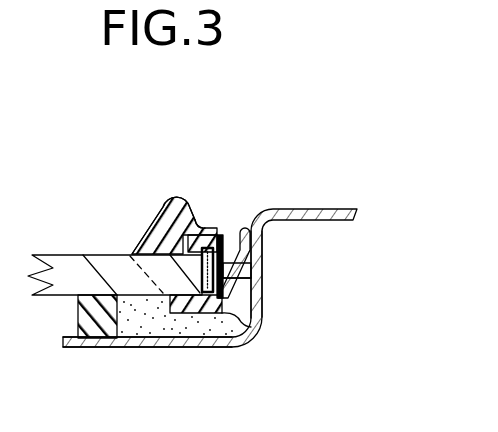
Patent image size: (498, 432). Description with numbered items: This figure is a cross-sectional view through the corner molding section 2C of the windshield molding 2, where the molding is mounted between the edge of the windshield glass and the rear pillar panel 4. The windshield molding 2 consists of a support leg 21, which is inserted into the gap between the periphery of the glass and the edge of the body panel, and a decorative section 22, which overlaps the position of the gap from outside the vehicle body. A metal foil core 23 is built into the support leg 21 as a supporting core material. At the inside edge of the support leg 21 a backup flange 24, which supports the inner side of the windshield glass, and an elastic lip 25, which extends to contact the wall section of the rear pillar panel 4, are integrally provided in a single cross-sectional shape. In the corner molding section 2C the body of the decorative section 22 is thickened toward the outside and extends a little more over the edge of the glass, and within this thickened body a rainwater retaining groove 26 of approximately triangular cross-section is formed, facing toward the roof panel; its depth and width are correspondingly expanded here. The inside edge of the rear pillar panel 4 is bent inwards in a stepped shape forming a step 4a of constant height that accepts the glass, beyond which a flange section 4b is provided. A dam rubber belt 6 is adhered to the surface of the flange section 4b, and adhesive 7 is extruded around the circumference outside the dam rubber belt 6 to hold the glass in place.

The windshield molding 2 is at (115, 275).
The corner molding section 2C is at (154, 186).
The decorative section 22 is at (150, 227).
The rainwater retaining groove 26 is at (202, 224).
The support leg 21 is at (261, 283).
The metal foil core 23 is at (261, 272).
The elastic lip 25 is at (262, 238).
The backup flange 24 is at (194, 318).
The adhesive 7 is at (218, 328).
The dam rubber belt 6 is at (85, 318).
The rear pillar panel 4 is at (212, 269).
The step 4a is at (262, 294).
The flange section 4b is at (127, 350).